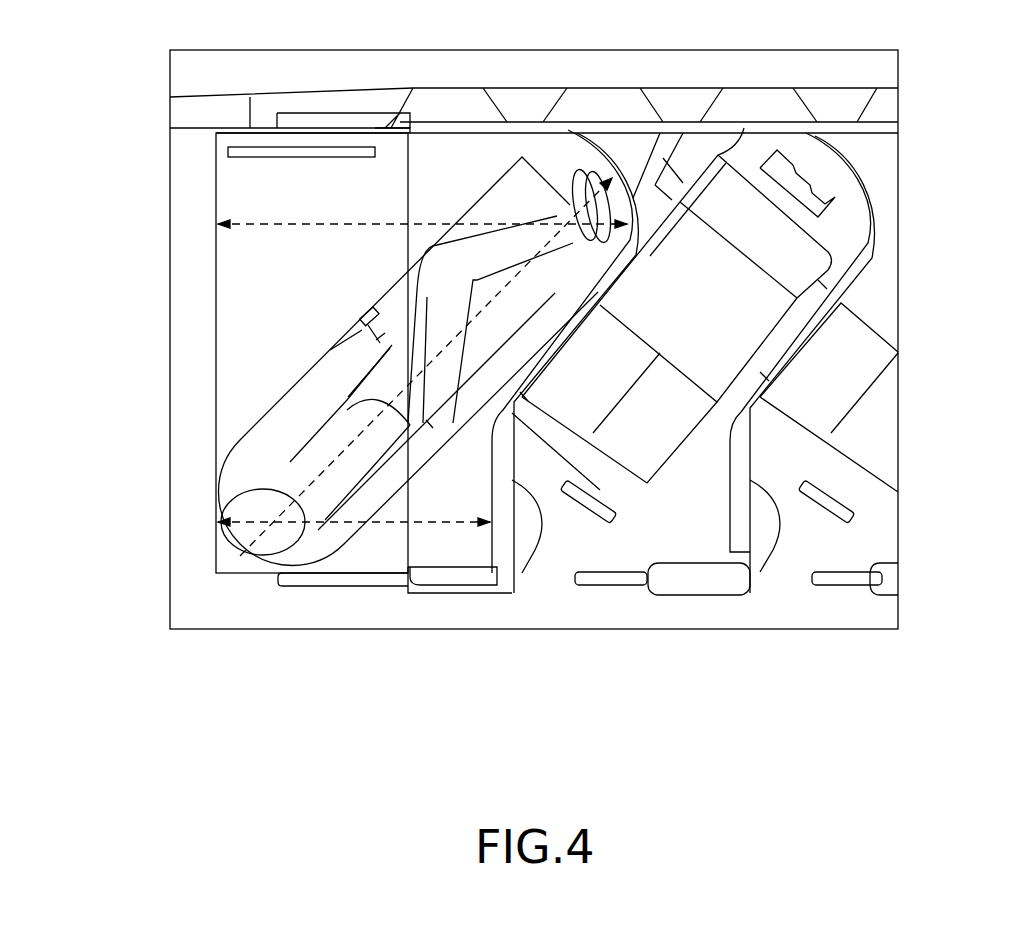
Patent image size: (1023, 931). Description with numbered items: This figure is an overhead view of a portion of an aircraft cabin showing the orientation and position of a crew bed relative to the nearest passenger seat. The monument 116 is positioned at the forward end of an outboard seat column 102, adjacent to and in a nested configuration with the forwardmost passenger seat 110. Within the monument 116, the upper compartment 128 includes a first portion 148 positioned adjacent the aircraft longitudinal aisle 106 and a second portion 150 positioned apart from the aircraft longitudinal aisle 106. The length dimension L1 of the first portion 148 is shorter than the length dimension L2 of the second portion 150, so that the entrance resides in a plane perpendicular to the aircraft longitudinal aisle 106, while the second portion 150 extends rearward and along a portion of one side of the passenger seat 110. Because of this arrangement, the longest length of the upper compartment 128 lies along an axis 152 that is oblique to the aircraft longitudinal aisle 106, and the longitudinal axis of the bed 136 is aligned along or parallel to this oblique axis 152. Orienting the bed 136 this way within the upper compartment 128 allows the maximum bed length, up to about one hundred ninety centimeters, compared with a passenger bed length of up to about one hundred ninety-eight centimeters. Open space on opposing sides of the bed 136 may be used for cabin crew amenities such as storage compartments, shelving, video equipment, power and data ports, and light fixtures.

The outboard seat column 102 is at (910, 122).
The aircraft longitudinal aisle 106 is at (275, 603).
The passenger seat 110 is at (757, 213).
The monument 116 is at (205, 193).
The upper compartment 128 is at (390, 142).
The bed 136 is at (533, 195).
The first portion 148 is at (452, 552).
The second portion 150 is at (315, 182).
The oblique axis 152 is at (237, 565).
The length dimension of the first portion L1 is at (375, 530).
The length dimension of the second portion L2 is at (265, 225).